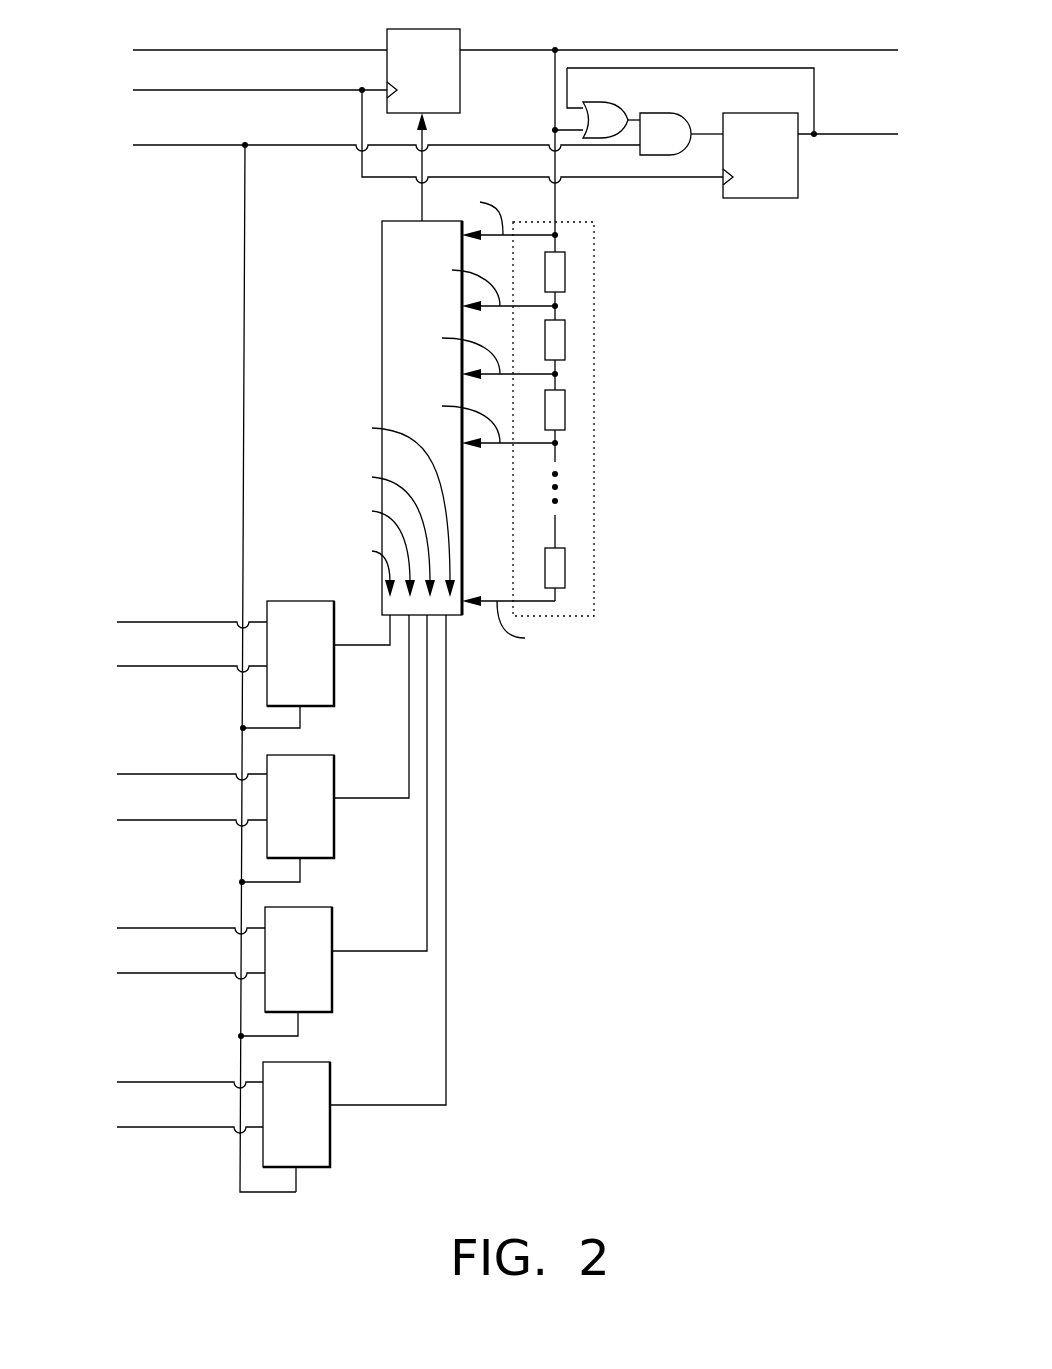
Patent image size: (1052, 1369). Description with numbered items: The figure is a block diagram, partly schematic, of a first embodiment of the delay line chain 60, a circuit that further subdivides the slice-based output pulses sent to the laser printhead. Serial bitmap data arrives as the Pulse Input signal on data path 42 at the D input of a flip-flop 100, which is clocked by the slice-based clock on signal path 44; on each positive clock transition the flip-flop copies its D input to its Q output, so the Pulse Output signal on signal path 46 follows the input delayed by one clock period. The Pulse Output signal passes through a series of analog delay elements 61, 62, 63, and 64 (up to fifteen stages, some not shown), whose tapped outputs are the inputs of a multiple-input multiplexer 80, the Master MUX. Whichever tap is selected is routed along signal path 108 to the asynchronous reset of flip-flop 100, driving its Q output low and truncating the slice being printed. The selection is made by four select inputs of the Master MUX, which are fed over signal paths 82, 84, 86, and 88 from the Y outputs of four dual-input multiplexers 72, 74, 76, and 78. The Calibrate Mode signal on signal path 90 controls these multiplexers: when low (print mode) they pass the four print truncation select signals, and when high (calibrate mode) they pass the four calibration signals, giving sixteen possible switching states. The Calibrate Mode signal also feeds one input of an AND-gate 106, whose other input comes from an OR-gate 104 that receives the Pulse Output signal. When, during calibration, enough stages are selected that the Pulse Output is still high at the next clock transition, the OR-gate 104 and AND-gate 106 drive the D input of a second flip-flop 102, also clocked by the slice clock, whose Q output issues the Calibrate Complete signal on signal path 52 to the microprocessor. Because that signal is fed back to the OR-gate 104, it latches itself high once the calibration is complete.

The data path for PI signal 42 is at (240, 48).
The signal path for SC clock signal 44 is at (198, 92).
The Pulse Output signal path 46 is at (808, 50).
The signal path for Calibrate Complete signal 52 is at (837, 135).
The delay line chain 60 is at (118, 331).
The delay element 61 is at (565, 268).
The delay element 62 is at (565, 337).
The delay element 63 is at (565, 405).
The delay element 64 is at (565, 563).
The dual-input multiplexer 72 is at (318, 706).
The dual-input multiplexer 74 is at (318, 858).
The dual-input multiplexer 76 is at (318, 1012).
The dual-input multiplexer 78 is at (318, 1167).
The multiple-input multiplexer 80 is at (395, 306).
The signal path 82 is at (350, 645).
The signal path 84 is at (344, 798).
The signal path 86 is at (350, 951).
The signal path 88 is at (368, 1105).
The signal path for Calibrate Mode signal 90 is at (175, 145).
The flip-flop 100 is at (420, 34).
The flip-flop 102 is at (773, 192).
The OR-gate 104 is at (593, 105).
The AND-gate 106 is at (673, 120).
The signal path 108 is at (420, 196).